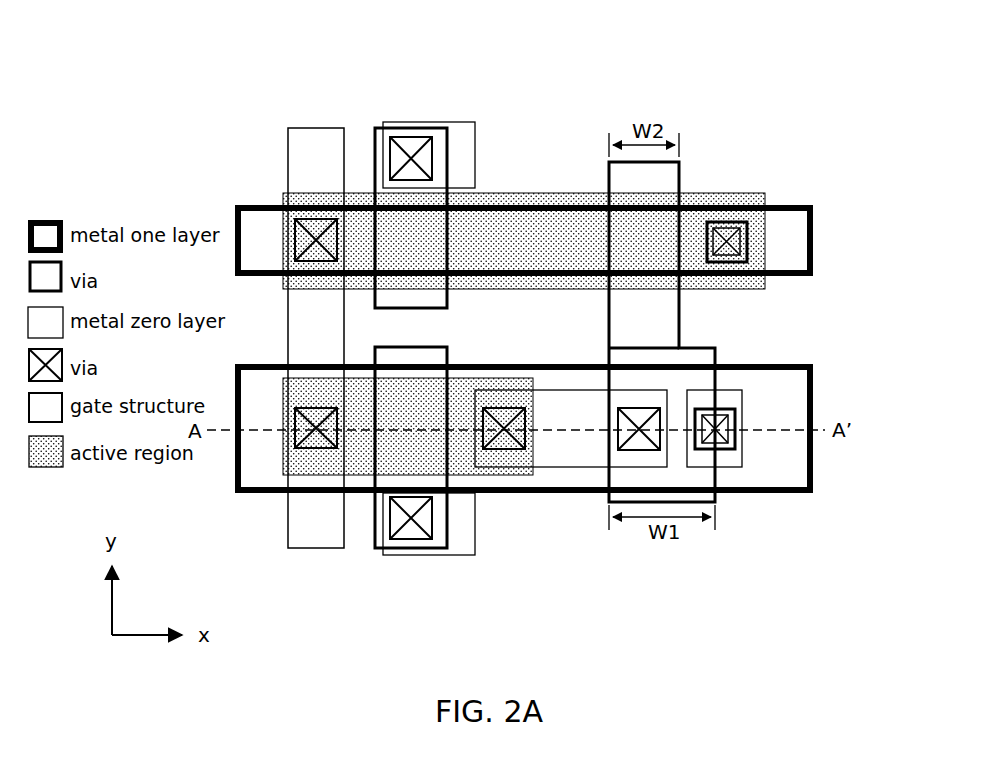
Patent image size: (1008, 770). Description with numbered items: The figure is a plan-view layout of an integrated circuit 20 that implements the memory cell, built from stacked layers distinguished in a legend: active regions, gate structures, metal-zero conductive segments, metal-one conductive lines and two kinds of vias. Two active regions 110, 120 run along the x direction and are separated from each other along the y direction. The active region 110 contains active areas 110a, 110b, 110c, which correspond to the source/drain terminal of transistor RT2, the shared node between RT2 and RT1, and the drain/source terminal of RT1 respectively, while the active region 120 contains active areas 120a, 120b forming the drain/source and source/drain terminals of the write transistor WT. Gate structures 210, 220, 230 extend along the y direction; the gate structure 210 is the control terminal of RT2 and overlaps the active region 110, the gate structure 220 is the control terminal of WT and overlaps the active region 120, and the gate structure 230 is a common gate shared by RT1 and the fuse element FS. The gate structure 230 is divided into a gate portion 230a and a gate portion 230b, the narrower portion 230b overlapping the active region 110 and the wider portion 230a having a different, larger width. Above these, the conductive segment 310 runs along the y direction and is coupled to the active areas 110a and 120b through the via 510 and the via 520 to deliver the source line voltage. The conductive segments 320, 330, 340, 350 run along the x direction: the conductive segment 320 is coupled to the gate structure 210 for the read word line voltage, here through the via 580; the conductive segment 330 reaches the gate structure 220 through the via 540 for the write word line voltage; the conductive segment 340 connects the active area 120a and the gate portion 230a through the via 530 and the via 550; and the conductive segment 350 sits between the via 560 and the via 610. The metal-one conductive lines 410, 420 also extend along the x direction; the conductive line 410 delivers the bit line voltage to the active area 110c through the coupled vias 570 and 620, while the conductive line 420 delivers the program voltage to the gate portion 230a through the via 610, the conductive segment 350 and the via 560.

The integrated circuit 20 is at (146, 18).
The active region 110 is at (765, 258).
The active area 110a is at (352, 194).
The active area 110b is at (558, 194).
The active area 110c is at (726, 200).
The active region 120 is at (503, 478).
The active area 120a is at (465, 392).
The active area 120b is at (357, 392).
The gate structure 210 is at (415, 127).
The gate structure 220 is at (415, 550).
The gate structure 230 is at (609, 355).
The gate portion 230a is at (713, 352).
The gate portion 230b is at (609, 318).
The conductive segment 310 is at (288, 160).
The conductive segment 320 is at (476, 152).
The conductive segment 330 is at (465, 557).
The conductive segment 340 is at (570, 470).
The conductive segment 350 is at (742, 389).
The conductive line 410 is at (812, 212).
The conductive line 420 is at (812, 480).
The via 510 is at (296, 242).
The via 520 is at (313, 405).
The via 530 is at (540, 456).
The via 540 is at (391, 519).
The via 550 is at (617, 446).
The via 560 is at (737, 404).
The via 570 is at (708, 240).
The via 580 is at (432, 158).
The via 610 is at (738, 440).
The via 620 is at (748, 238).